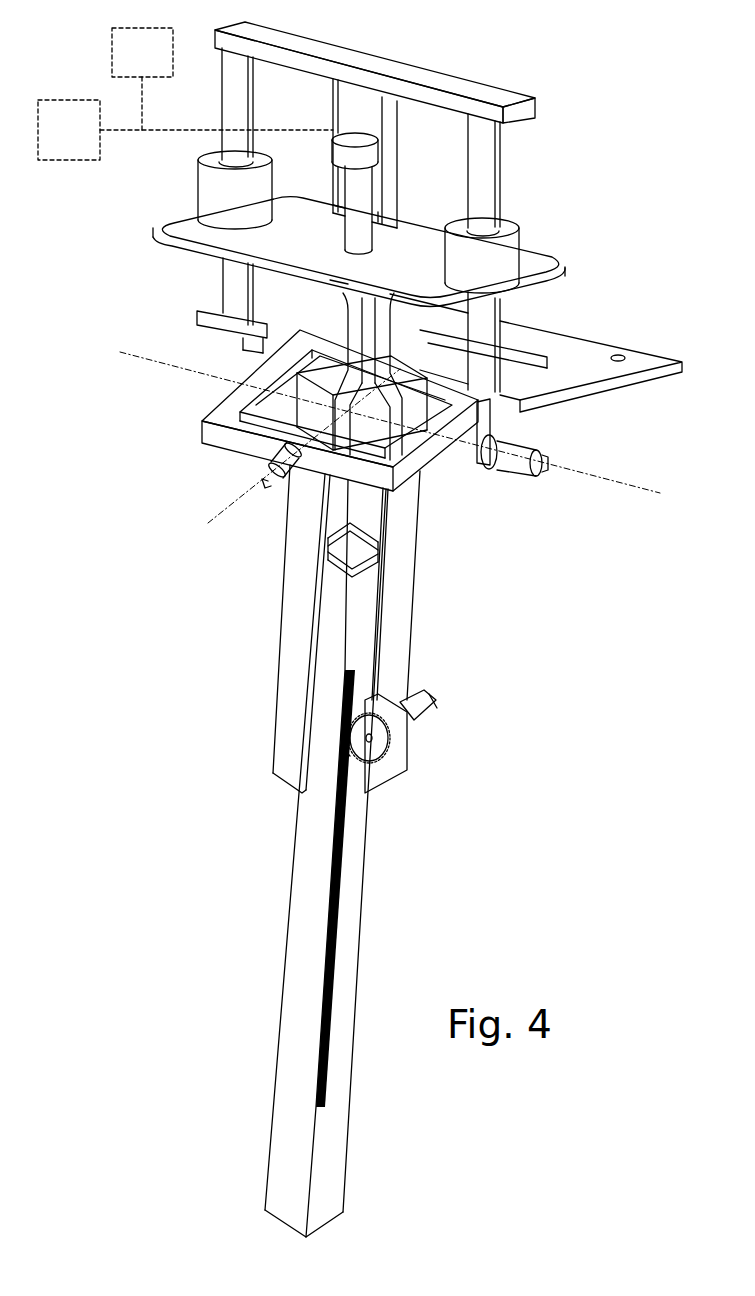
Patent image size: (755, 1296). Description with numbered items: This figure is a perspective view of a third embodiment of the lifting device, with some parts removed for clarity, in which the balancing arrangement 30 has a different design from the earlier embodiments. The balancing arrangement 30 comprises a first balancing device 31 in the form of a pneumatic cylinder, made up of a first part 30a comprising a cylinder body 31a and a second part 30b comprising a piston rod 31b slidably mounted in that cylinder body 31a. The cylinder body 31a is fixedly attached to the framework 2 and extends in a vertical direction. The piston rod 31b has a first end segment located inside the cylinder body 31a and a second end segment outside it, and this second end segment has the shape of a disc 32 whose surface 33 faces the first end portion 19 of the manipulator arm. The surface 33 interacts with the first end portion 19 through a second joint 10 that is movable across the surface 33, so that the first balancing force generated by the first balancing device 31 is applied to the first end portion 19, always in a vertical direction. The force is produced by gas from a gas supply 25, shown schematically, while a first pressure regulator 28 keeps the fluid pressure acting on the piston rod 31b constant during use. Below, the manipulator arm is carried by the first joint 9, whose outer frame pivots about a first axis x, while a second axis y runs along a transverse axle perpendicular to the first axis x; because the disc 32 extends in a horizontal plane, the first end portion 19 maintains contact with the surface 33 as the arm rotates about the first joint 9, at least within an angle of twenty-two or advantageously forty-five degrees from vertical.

The framework 2 is at (549, 107).
The first joint 9 is at (447, 491).
The second joint 10 is at (334, 306).
The first end portion 19 is at (243, 382).
The gas supply 25 is at (118, 48).
The first pressure regulator 28 is at (82, 104).
The balancing arrangement 30 is at (537, 246).
The first part 30a is at (418, 72).
The second part 30b is at (364, 238).
The first balancing device 31 is at (316, 158).
The cylinder body 31a is at (358, 86).
The piston rod 31b is at (363, 178).
The disc 32 is at (235, 243).
The surface 33 is at (182, 251).
The first axis x is at (397, 428).
The second axis y is at (295, 454).